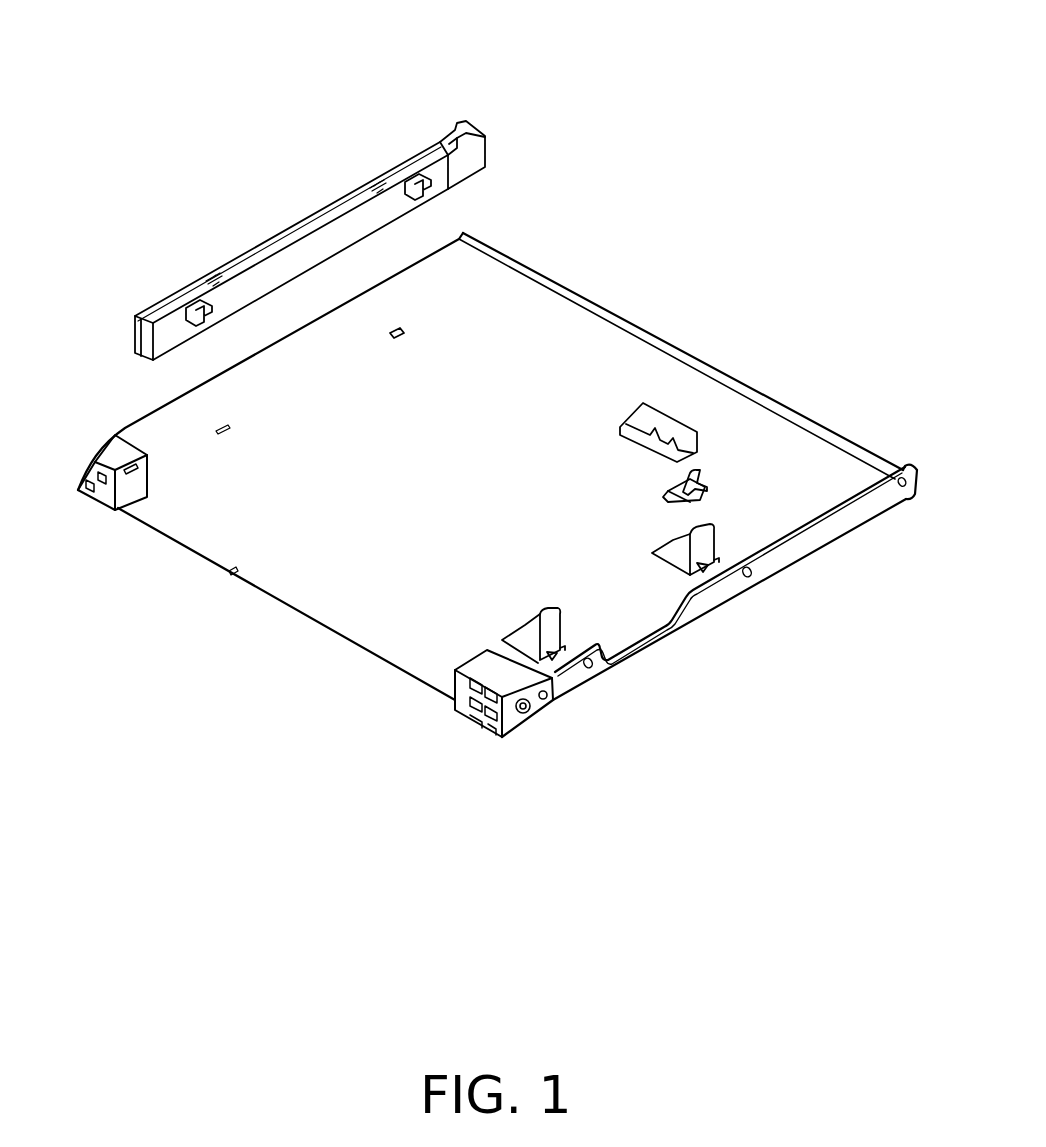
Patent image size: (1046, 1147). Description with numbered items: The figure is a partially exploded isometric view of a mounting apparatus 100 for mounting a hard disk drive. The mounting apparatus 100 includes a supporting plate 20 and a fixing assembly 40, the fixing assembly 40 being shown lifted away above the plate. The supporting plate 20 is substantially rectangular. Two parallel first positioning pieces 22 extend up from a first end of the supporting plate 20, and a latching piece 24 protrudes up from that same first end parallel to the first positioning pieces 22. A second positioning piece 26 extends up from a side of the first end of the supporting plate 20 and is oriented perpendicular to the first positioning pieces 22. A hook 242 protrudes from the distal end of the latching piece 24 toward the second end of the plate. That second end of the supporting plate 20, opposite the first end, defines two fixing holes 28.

The mounting apparatus 100 is at (401, 66).
The supporting plate 20 is at (617, 352).
The first positioning pieces 22 is at (708, 538).
The latching piece 24 is at (700, 477).
The hook 242 is at (697, 497).
The second positioning piece 26 is at (668, 425).
The fixing holes 28 is at (393, 332).
The fixing assembly 40 is at (410, 170).